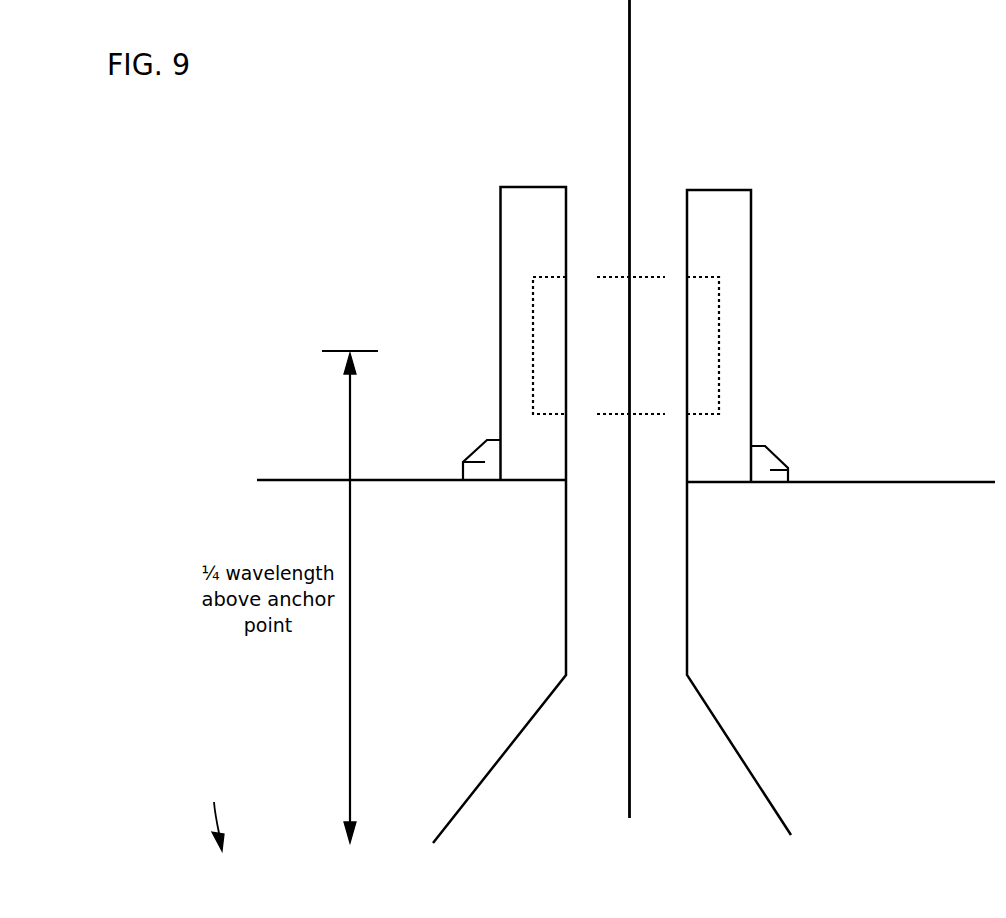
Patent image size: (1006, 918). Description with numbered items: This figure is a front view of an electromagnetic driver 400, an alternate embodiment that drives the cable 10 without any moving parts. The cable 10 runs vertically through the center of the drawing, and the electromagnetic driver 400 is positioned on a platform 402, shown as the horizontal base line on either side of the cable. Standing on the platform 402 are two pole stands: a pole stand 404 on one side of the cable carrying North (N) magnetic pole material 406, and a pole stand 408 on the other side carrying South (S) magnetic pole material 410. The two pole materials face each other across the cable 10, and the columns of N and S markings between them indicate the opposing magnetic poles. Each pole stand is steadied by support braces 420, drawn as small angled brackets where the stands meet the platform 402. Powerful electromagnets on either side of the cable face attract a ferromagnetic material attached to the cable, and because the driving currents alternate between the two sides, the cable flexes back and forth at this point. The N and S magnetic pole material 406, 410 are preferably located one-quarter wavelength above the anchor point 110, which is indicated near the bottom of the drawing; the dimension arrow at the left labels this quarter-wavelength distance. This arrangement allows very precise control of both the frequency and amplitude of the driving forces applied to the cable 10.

The electromagnetic driver 400 is at (921, 122).
The cable 10 is at (629, 122).
The pole stand 408 is at (517, 240).
The pole stand 404 is at (738, 227).
The South magnetic pole material 410 is at (532, 365).
The North magnetic pole material 406 is at (718, 373).
The platform 402 is at (442, 552).
The support braces 420 is at (463, 462).
The anchor point 110 is at (214, 814).